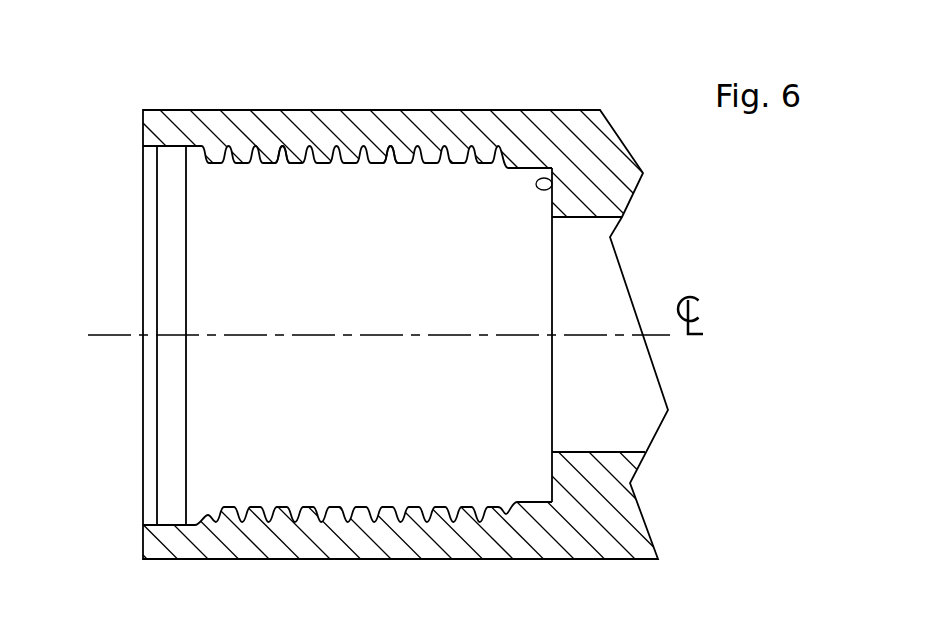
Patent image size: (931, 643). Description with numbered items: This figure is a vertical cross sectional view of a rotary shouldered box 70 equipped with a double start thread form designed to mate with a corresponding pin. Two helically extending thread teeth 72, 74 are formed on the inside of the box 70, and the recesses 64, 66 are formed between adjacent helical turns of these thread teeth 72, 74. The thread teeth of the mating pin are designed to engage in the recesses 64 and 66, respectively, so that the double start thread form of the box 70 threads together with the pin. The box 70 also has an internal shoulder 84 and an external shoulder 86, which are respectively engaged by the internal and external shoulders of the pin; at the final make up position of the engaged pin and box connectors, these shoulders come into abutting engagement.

The box 70 is at (100, 396).
The thread tooth 72 is at (245, 147).
The thread tooth 74 is at (207, 147).
The recess 64 is at (235, 165).
The recess 66 is at (281, 166).
The internal shoulder 84 is at (552, 172).
The external shoulder 86 is at (143, 133).